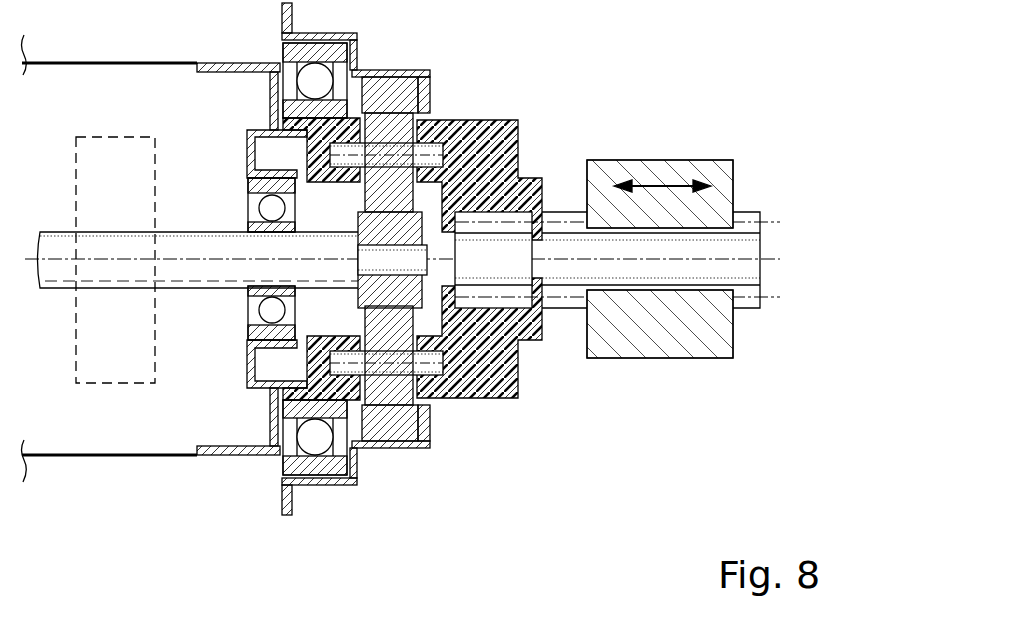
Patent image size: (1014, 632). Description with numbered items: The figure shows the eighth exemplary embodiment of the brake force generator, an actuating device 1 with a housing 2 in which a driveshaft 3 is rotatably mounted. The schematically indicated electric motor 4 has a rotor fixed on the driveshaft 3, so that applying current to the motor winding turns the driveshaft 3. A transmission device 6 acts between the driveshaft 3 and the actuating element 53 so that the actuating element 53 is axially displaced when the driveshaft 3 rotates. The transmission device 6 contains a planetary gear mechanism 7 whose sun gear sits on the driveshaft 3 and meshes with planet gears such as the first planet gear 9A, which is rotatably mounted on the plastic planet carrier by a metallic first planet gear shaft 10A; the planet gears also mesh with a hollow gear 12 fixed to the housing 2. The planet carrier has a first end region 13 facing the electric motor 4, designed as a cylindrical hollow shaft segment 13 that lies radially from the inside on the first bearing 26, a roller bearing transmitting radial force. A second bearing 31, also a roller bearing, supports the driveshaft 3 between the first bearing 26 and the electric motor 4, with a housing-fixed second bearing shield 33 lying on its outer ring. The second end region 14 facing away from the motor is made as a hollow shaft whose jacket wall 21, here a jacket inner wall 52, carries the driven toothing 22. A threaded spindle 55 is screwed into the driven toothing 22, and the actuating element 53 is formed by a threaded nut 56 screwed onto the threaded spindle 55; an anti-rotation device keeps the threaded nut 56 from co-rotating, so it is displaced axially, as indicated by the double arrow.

The actuating device 1 is at (253, 486).
The housing 2 is at (128, 62).
The driveshaft 3 is at (178, 242).
The electric motor 4 is at (113, 384).
The transmission device 6 is at (456, 432).
The planetary gear mechanism 7 is at (450, 98).
The first planet gear 9A is at (398, 125).
The first planet gear shaft 10A is at (447, 124).
The hollow gear 12 is at (398, 85).
The first end region 13 is at (332, 198).
The second end region 14 is at (512, 418).
The jacket wall 21 is at (537, 245).
The driven toothing 22 is at (537, 245).
The first bearing 26 is at (318, 470).
The second bearing 31 is at (251, 222).
The second bearing shield 33 is at (250, 155).
The jacket inner wall 52 is at (484, 240).
The actuating element 53 is at (660, 215).
The threaded spindle 55 is at (565, 217).
The threaded nut 56 is at (667, 169).